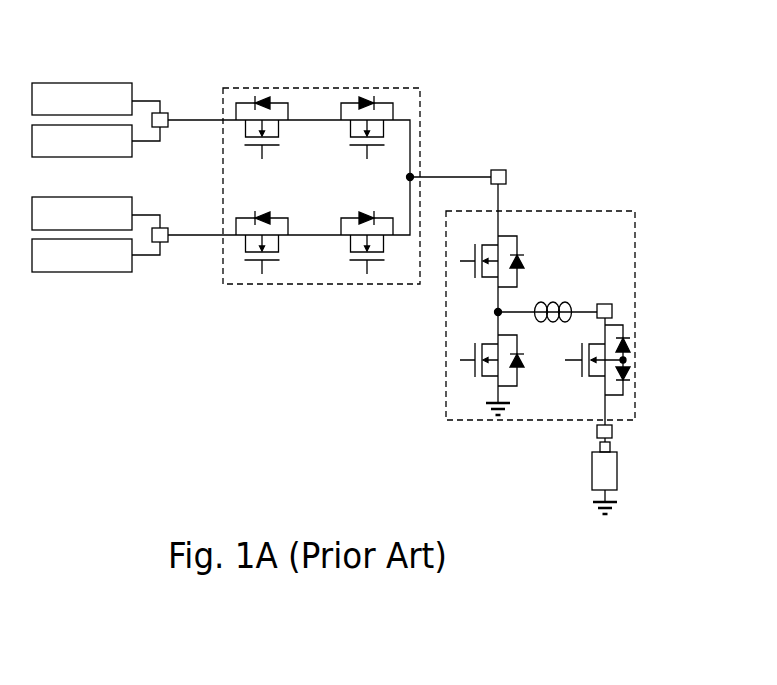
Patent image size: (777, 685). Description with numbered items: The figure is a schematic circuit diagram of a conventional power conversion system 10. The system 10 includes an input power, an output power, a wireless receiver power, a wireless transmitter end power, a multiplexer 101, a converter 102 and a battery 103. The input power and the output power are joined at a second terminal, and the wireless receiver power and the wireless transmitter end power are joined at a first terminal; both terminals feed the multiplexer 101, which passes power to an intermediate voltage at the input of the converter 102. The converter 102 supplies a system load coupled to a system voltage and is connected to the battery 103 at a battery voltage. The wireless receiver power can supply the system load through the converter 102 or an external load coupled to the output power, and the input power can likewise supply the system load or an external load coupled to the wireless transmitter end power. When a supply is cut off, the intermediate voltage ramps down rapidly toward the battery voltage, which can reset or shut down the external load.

The conventional power conversion system 10 is at (102, 32).
The multiplexer 101 is at (290, 86).
The converter 102 is at (603, 211).
The battery 103 is at (617, 457).